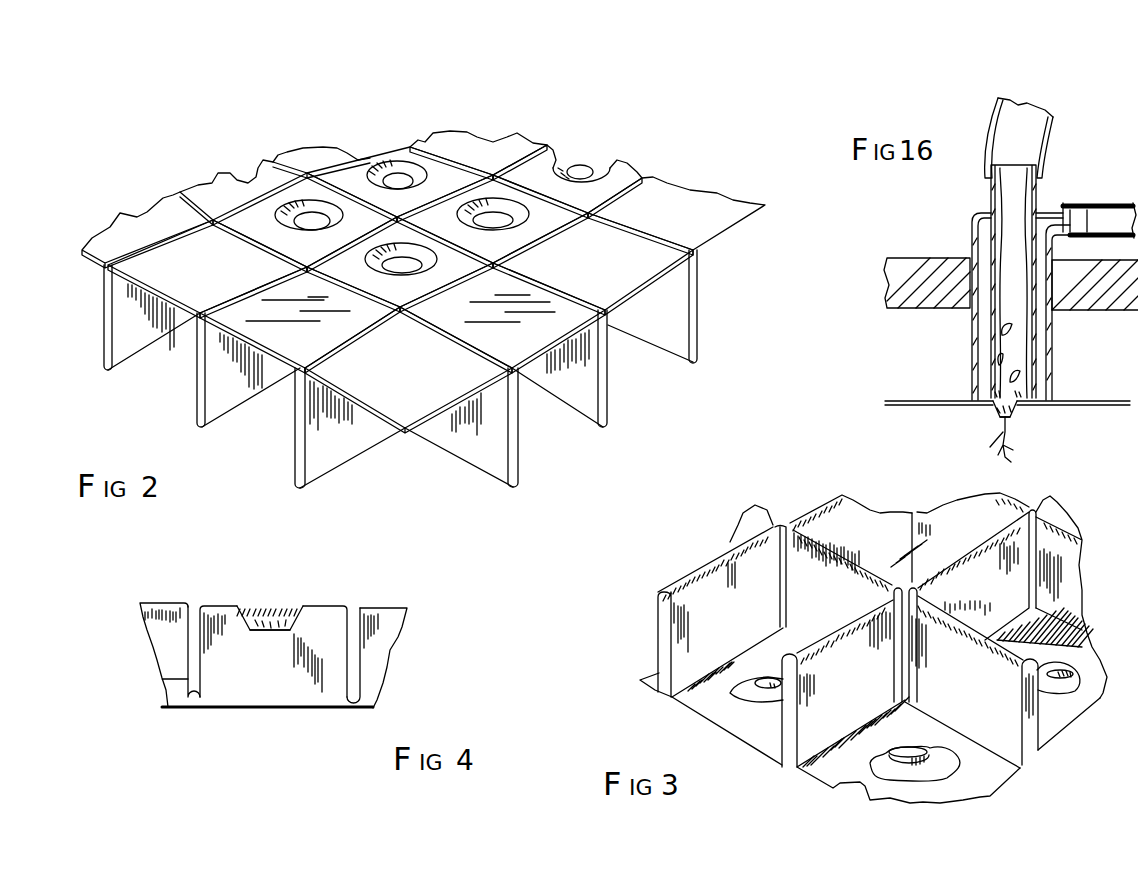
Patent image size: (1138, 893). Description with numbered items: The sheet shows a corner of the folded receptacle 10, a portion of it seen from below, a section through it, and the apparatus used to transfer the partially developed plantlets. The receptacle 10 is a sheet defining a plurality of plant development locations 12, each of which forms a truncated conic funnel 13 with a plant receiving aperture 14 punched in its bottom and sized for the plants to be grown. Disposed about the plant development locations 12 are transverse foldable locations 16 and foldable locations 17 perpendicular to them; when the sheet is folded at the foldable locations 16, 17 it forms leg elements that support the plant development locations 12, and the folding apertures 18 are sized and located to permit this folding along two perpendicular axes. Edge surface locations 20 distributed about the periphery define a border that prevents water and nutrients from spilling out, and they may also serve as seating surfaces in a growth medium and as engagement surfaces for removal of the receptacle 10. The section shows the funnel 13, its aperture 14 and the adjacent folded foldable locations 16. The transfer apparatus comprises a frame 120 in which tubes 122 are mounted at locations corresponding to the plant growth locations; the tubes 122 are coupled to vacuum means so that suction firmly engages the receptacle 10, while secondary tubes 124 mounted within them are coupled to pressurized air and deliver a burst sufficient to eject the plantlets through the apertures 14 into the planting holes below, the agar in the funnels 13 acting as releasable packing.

In FIG. 2, the receptacle 10 is at (386, 131).
In FIG. 3, the receptacle 10 is at (699, 725).
In FIG. 16, the receptacle 10 is at (925, 400).
In FIG. 2, the plant development location 12 is at (542, 170).
In FIG. 4, the plant development location 12 is at (318, 606).
In FIG. 3, the plant development location 12 is at (862, 781).
In FIG. 2, the truncated conic funnel 13 is at (577, 158).
In FIG. 4, the truncated conic funnel 13 is at (255, 608).
In FIG. 3, the truncated conic funnel 13 is at (895, 767).
In FIG. 16, the truncated conic funnel 13 is at (991, 415).
In FIG. 2, the plant receiving aperture 14 is at (597, 168).
In FIG. 4, the plant receiving aperture 14 is at (270, 632).
In FIG. 3, the plant receiving aperture 14 is at (957, 785).
In FIG. 16, the plant receiving aperture 14 is at (1018, 419).
In FIG. 2, the transverse foldable location 16 is at (522, 430).
In FIG. 4, the transverse foldable location 16 is at (160, 680).
In FIG. 3, the transverse foldable location 16 is at (705, 565).
In FIG. 2, the foldable location 17 is at (292, 425).
In FIG. 3, the foldable location 17 is at (903, 558).
In FIG. 3, the folding aperture 18 is at (1031, 510).
In FIG. 2, the edge surface location 20 is at (618, 277).
In FIG. 16, the frame 120 is at (1083, 293).
In FIG. 16, the tube 122 is at (1052, 367).
In FIG. 16, the secondary tube 124 is at (1038, 196).